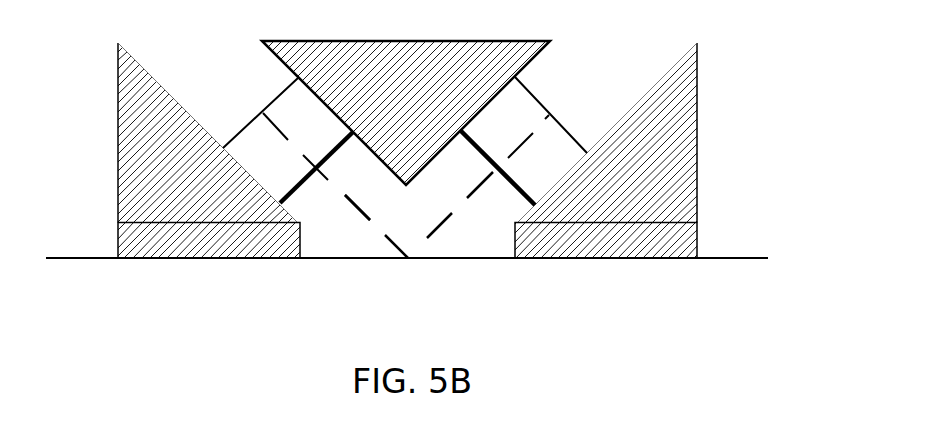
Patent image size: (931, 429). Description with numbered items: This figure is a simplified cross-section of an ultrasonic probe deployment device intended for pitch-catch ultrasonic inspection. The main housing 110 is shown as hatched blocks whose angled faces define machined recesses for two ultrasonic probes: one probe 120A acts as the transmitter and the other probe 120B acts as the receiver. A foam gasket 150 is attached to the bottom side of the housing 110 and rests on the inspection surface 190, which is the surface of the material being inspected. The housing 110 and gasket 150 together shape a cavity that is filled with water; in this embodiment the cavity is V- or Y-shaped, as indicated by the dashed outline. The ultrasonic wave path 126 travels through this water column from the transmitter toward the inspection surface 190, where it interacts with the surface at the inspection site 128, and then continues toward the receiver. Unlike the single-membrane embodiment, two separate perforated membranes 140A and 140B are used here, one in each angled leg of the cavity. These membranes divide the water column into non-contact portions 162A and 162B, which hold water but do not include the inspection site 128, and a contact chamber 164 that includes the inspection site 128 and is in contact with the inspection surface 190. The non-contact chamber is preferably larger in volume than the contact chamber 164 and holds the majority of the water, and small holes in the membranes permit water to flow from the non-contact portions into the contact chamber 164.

The main housing 110 is at (407, 132).
The transmitter probe 120A is at (212, 60).
The receiver probe 120B is at (611, 60).
The ultrasonic wave path 126 is at (283, 276).
The inspection site 128 is at (454, 300).
The first perforated membrane 140A is at (259, 229).
The second perforated membrane 140B is at (558, 227).
The foam gasket 150 is at (407, 240).
The first non-contact chamber part 162A is at (277, 129).
The second non-contact chamber part 162B is at (536, 117).
The contact chamber 164 is at (419, 215).
The inspection surface 190 is at (432, 300).